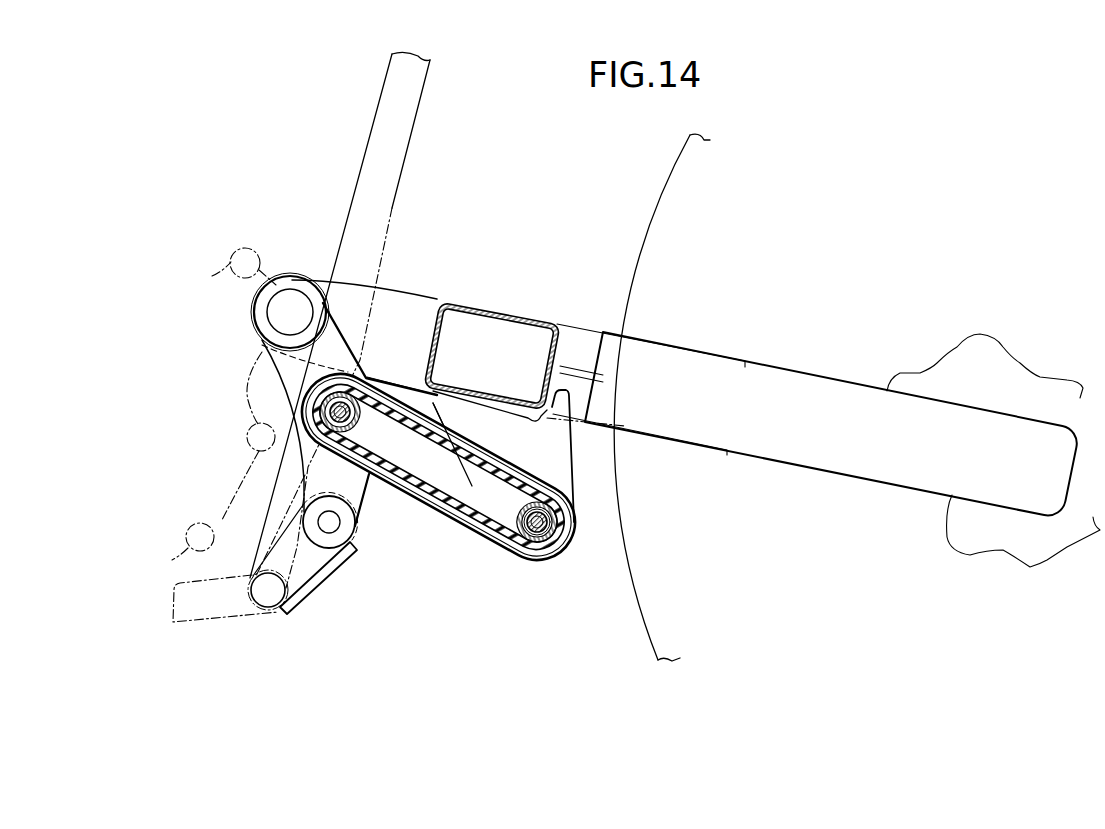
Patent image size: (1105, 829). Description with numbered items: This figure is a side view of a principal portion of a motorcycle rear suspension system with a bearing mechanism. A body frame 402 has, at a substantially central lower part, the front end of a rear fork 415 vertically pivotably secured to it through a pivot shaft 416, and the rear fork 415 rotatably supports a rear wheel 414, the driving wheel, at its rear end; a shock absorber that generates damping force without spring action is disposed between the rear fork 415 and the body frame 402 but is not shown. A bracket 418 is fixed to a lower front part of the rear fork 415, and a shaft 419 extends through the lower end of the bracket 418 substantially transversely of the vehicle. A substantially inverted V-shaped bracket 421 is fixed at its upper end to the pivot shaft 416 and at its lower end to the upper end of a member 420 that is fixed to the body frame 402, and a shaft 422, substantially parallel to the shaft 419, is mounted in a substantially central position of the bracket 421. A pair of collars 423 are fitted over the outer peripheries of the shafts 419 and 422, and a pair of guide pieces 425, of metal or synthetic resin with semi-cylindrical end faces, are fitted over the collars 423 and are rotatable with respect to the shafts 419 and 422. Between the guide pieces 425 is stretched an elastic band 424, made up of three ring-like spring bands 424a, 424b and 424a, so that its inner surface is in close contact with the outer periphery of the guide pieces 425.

The body frame 402 is at (397, 196).
The rear wheel 414 is at (658, 200).
The rear fork 415 is at (787, 386).
The pivot shaft 416 is at (272, 318).
The bracket 418 is at (578, 465).
The shaft 419 is at (533, 540).
The member 420 is at (308, 573).
The bracket 421 is at (371, 474).
The shaft 422 is at (367, 392).
The collars 423 is at (360, 428).
The elastic band 424 is at (412, 520).
The spring band 424a is at (484, 520).
The spring band 424b is at (452, 502).
The guide pieces 425 is at (364, 440).